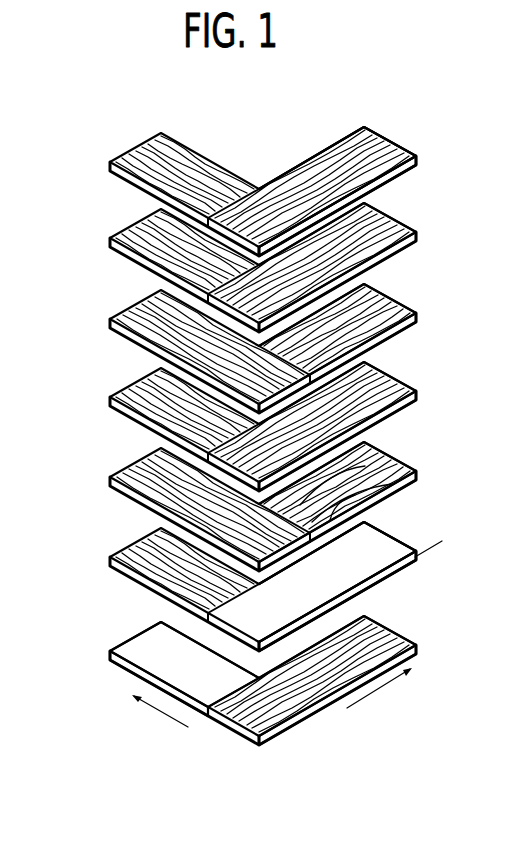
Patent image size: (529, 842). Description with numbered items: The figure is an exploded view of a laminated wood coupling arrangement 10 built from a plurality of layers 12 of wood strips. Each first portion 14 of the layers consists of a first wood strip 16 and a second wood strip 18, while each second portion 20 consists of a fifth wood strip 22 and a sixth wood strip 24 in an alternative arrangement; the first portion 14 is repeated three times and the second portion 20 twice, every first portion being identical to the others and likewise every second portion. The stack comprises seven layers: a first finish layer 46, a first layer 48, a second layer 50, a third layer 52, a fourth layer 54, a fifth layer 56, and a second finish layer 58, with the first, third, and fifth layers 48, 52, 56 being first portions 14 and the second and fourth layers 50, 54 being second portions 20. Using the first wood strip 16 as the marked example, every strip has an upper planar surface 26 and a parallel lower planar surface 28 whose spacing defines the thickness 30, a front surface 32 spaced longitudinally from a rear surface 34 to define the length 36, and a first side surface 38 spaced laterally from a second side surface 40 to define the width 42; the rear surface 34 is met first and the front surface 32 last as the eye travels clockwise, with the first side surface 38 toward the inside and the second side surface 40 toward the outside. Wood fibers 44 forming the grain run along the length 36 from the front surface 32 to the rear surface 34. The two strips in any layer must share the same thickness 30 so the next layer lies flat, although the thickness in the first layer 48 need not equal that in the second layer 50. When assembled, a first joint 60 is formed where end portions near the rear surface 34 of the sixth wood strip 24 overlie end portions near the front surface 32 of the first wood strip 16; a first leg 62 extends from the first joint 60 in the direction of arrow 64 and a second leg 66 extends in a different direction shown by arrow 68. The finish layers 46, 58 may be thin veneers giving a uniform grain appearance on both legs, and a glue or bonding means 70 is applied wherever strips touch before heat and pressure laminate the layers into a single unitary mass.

The laminated wood coupling arrangement 10 is at (392, 104).
The plurality of layers 12 is at (405, 141).
The first portion 14 is at (400, 218).
The first wood strip 16 is at (388, 506).
The second wood strip 18 is at (115, 575).
The second portion 20 is at (400, 310).
The fifth wood strip 22 is at (375, 495).
The sixth wood strip 24 is at (112, 493).
The upper planar surface 26 is at (380, 501).
The lower planar surface 28 is at (207, 630).
The thickness 30 is at (442, 543).
The front surface 32 is at (137, 462).
The rear surface 34 is at (418, 565).
The length 36 is at (345, 598).
The first side surface 38 is at (350, 497).
The second side surface 40 is at (130, 498).
The width 42 is at (378, 509).
The wood fibers 44 is at (167, 590).
The first finish layer 46 is at (107, 667).
The first layer 48 is at (108, 560).
The second layer 50 is at (108, 478).
The third layer 52 is at (112, 397).
The fourth layer 54 is at (110, 319).
The fifth layer 56 is at (110, 238).
The second finish layer 58 is at (110, 161).
The first joint 60 is at (258, 748).
The first leg 62 is at (331, 704).
The arrow 64 is at (385, 690).
The second leg 66 is at (228, 724).
The arrow 68 is at (160, 713).
The glue or bonding means 70 is at (365, 465).